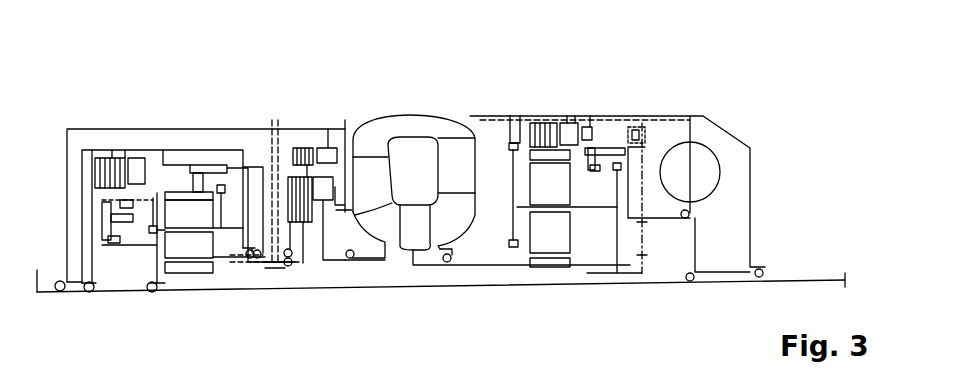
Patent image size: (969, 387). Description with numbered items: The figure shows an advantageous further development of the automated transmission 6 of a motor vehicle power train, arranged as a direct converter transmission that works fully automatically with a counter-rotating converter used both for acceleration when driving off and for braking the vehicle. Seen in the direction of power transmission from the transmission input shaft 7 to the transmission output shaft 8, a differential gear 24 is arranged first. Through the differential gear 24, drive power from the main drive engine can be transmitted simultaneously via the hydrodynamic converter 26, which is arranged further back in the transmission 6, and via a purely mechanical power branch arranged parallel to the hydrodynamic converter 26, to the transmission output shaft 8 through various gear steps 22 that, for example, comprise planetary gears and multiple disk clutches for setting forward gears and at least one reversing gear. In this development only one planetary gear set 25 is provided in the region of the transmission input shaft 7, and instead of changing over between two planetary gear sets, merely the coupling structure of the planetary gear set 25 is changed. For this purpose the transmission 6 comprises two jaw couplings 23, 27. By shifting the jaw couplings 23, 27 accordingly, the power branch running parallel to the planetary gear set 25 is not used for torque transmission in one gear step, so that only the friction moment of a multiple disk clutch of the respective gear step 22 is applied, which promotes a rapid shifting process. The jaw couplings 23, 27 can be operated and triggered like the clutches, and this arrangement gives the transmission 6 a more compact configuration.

The transmission 6 is at (617, 145).
The transmission input shaft 7 is at (38, 292).
The transmission output shaft 8 is at (801, 281).
The gear steps 22 is at (549, 110).
The jaw coupling 23 is at (209, 157).
The differential gear 24 is at (203, 183).
The planetary gear set 25 is at (190, 283).
The hydrodynamic converter 26 is at (397, 265).
The jaw coupling 27 is at (125, 252).